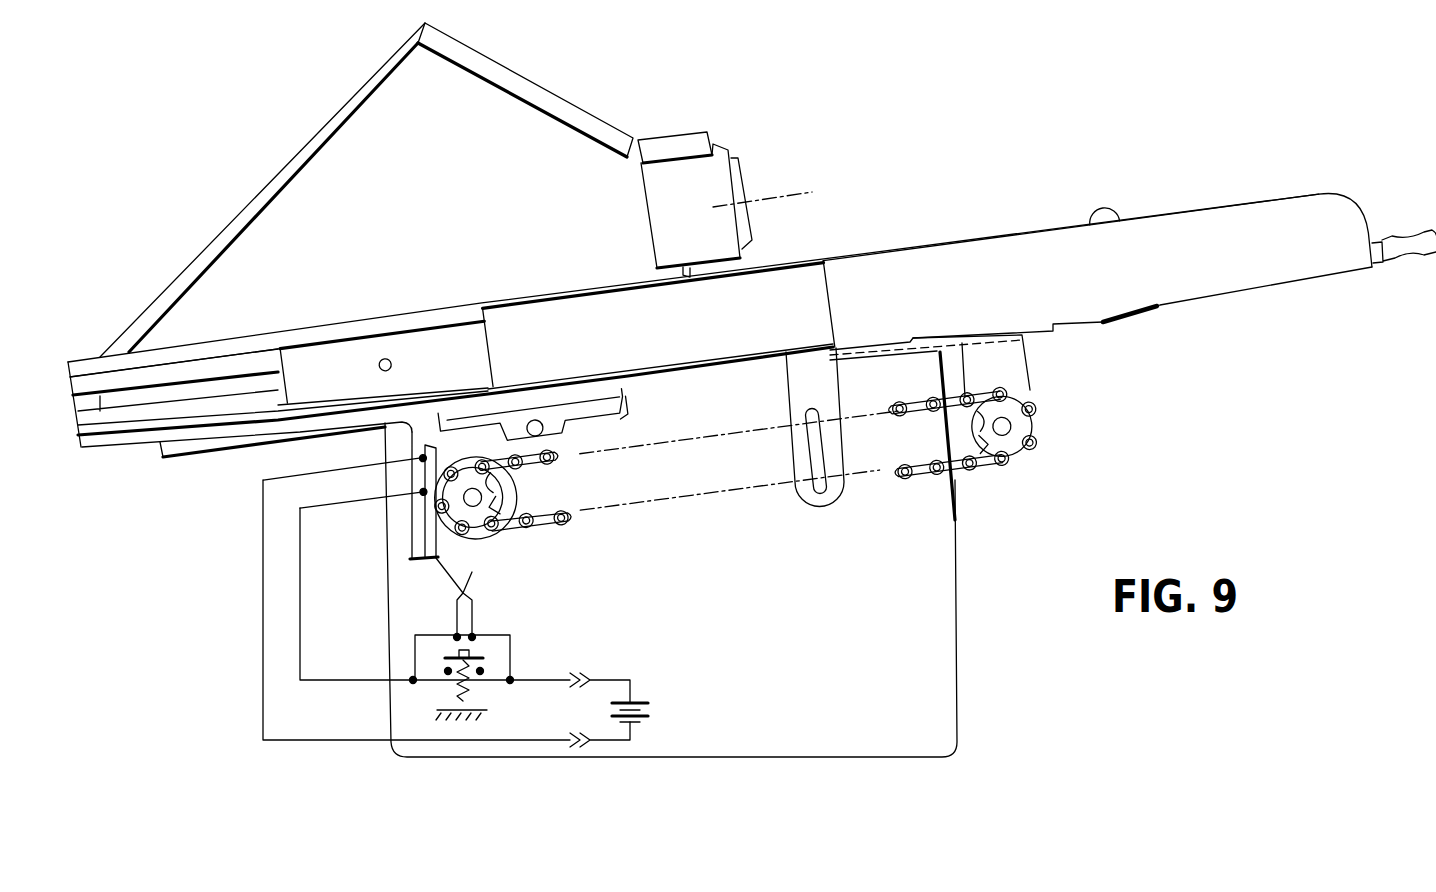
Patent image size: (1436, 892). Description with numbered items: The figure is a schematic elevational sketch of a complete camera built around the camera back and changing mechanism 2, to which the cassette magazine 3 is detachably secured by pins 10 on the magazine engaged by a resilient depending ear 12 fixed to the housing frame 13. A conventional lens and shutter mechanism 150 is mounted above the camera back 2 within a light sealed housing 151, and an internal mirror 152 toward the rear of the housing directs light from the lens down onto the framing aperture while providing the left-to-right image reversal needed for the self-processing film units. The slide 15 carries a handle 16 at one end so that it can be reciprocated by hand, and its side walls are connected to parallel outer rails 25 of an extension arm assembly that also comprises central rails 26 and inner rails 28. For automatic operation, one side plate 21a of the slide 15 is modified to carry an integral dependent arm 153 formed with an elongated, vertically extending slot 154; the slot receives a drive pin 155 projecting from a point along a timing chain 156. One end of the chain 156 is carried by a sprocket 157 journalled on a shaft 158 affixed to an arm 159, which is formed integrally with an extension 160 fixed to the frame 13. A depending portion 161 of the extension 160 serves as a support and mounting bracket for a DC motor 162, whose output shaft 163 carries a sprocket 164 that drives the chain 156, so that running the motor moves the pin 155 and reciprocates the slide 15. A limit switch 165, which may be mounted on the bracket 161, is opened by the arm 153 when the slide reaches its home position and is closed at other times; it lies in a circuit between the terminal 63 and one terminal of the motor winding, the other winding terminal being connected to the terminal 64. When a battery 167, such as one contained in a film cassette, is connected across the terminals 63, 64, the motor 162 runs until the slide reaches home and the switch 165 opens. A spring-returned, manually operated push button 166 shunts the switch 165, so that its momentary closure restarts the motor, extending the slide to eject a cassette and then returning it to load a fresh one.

The camera back and changing mechanism 2 is at (1138, 214).
The cassette magazine 3 is at (966, 611).
The pin 10 is at (562, 428).
The depending ear 12 is at (630, 410).
The housing frame 13 is at (190, 432).
The slide 15 is at (1226, 200).
The handle 16 is at (1418, 237).
The side plate 21a is at (1275, 248).
The outer rail 25 is at (543, 307).
The central rail 26 is at (328, 337).
The inner rail 28 is at (187, 345).
The terminal 63 is at (465, 605).
The terminal 64 is at (446, 613).
The lens and shutter mechanism 150 is at (740, 167).
The light sealed housing 151 is at (604, 121).
The internal mirror 152 is at (309, 158).
The dependent arm 153 is at (825, 393).
The slot 154 is at (820, 455).
The drive pin 155 is at (812, 427).
The timing chain 156 is at (923, 473).
The sprocket 157 is at (1020, 460).
The shaft 158 is at (1013, 427).
The arm 159 is at (1030, 361).
The extension 160 is at (260, 440).
The depending portion 161 is at (410, 528).
The DC motor 162 is at (483, 548).
The output shaft 163 is at (482, 495).
The sprocket 164 is at (517, 527).
The limit switch 165 is at (482, 593).
The push button 166 is at (488, 652).
The battery 167 is at (657, 711).